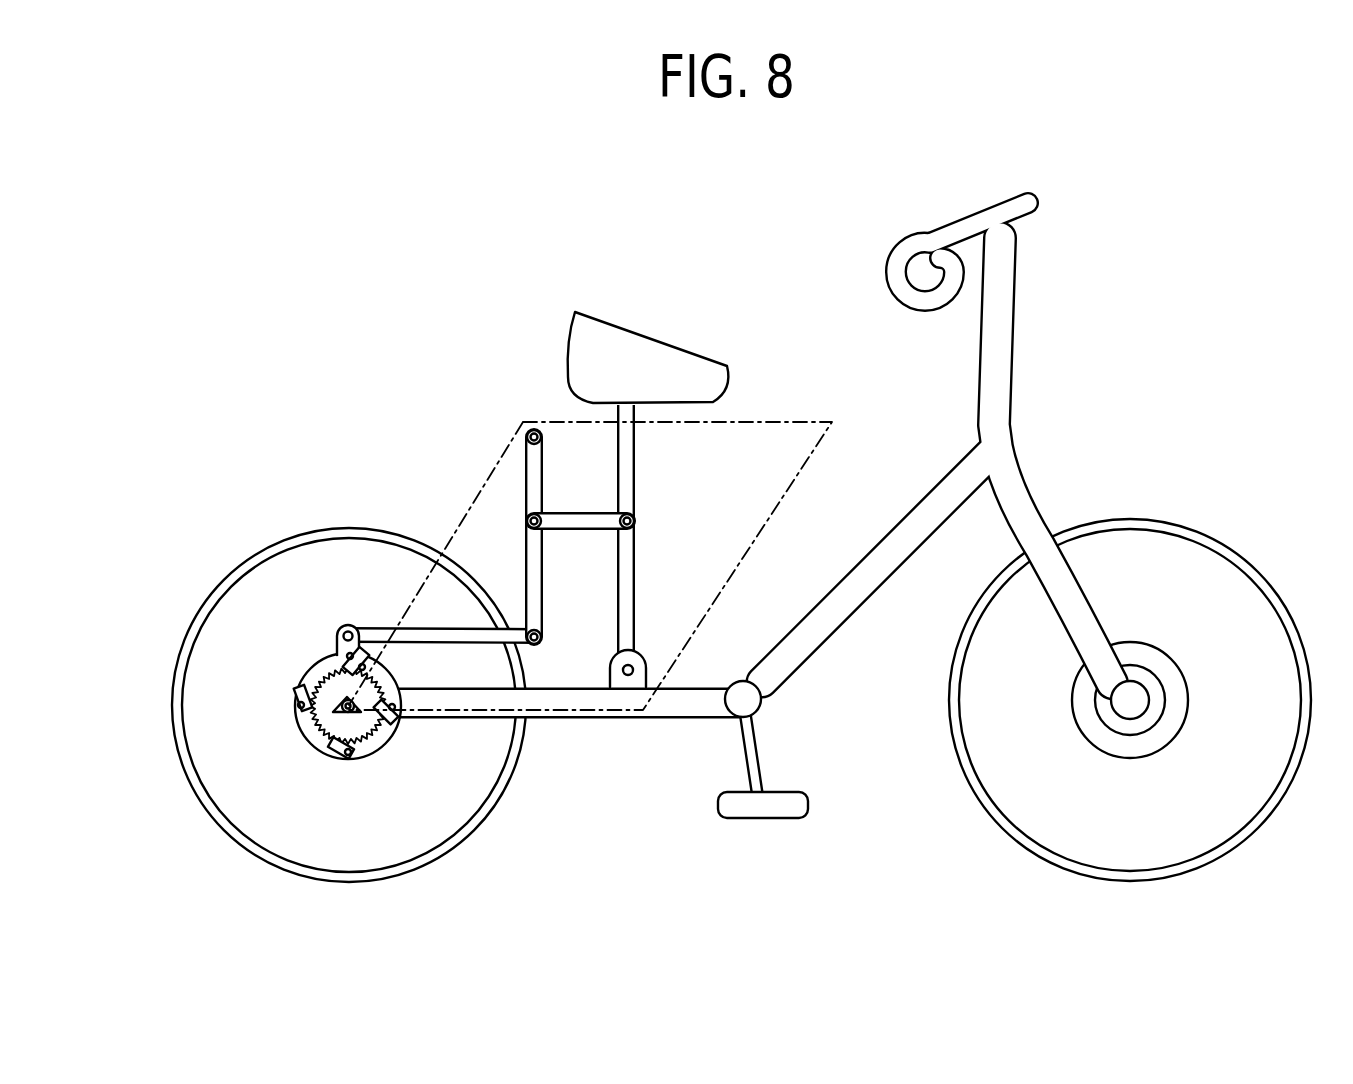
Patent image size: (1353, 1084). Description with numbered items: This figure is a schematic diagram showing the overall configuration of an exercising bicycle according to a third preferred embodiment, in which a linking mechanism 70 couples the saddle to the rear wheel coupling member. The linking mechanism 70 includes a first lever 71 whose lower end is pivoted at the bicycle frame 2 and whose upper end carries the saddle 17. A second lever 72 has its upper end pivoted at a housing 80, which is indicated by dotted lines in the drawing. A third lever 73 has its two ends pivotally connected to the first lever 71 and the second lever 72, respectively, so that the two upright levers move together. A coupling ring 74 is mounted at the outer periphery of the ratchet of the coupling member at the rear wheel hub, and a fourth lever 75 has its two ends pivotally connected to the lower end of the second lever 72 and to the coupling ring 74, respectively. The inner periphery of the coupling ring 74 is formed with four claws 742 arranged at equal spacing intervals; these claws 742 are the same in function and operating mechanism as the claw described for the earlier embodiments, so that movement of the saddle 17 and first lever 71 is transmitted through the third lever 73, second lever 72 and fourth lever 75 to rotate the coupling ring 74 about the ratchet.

The bicycle frame 2 is at (653, 713).
The saddle 17 is at (643, 352).
The linking mechanism 70 is at (361, 623).
The first lever 71 is at (625, 550).
The second lever 72 is at (527, 503).
The third lever 73 is at (577, 523).
The coupling ring 74 is at (338, 646).
The claw 742 is at (374, 648).
The fourth lever 75 is at (465, 633).
The housing 80 is at (816, 423).